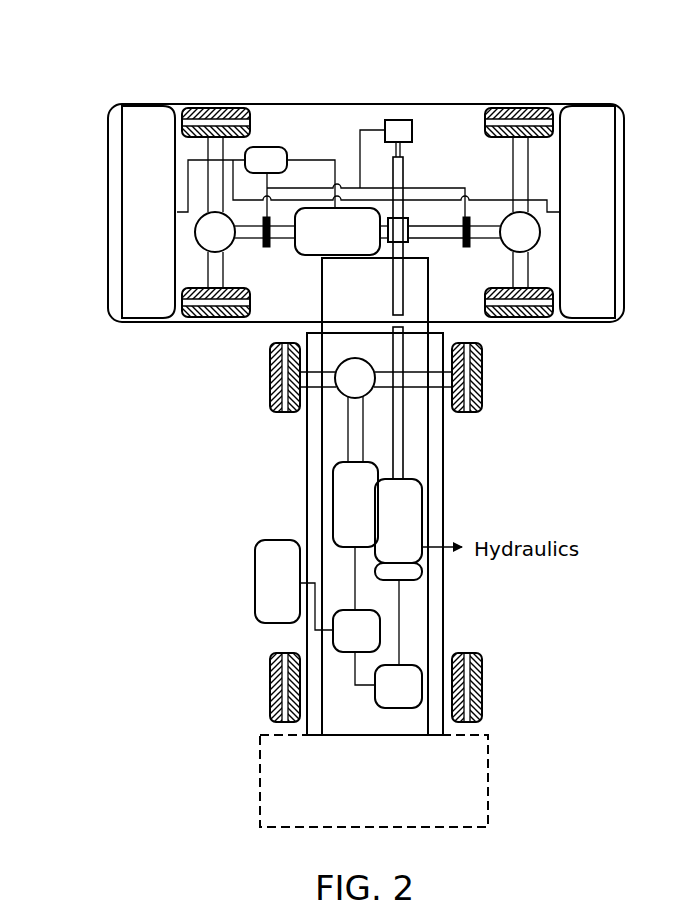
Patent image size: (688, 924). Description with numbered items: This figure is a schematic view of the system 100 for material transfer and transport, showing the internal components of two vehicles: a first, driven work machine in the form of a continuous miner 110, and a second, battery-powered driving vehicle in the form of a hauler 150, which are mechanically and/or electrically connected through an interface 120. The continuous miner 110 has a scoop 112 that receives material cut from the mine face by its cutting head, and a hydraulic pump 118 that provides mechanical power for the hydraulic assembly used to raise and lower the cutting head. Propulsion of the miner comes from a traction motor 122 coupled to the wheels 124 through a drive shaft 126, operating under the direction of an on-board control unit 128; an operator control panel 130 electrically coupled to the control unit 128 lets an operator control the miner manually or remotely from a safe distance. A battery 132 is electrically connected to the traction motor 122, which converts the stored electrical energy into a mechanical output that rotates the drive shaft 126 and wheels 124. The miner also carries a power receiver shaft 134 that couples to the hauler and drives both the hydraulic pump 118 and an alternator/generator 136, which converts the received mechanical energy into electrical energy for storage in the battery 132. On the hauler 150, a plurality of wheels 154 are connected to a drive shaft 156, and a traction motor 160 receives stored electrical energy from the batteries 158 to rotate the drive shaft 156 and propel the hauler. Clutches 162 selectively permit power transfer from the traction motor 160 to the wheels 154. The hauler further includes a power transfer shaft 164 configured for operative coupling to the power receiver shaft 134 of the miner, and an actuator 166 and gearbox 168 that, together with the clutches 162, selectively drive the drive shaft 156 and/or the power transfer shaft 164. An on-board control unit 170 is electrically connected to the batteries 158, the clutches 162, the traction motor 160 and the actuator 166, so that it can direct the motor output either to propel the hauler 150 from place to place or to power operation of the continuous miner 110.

The system 100 is at (100, 90).
The continuous miner 110 is at (215, 519).
The scoop 112 is at (394, 799).
The hydraulic pump 118 is at (410, 498).
The interface 120 is at (482, 333).
The traction motor 122 is at (345, 506).
The wheels 124 is at (270, 374).
The drive shaft 126 is at (348, 437).
The control unit 128 is at (380, 636).
The operator control panel 130 is at (268, 583).
The battery 132 is at (400, 695).
The power receiver shaft 134 is at (400, 466).
The alternator/generator 136 is at (410, 572).
The hauler 150 is at (143, 340).
The wheels 154 is at (215, 107).
The drive shaft 156 is at (282, 233).
The batteries 158 is at (166, 226).
The traction motor 160 is at (345, 228).
The clutches 162 is at (263, 243).
The power transfer shaft 164 is at (400, 302).
The actuator 166 is at (397, 128).
The gearbox 168 is at (405, 225).
The control unit 170 is at (263, 158).